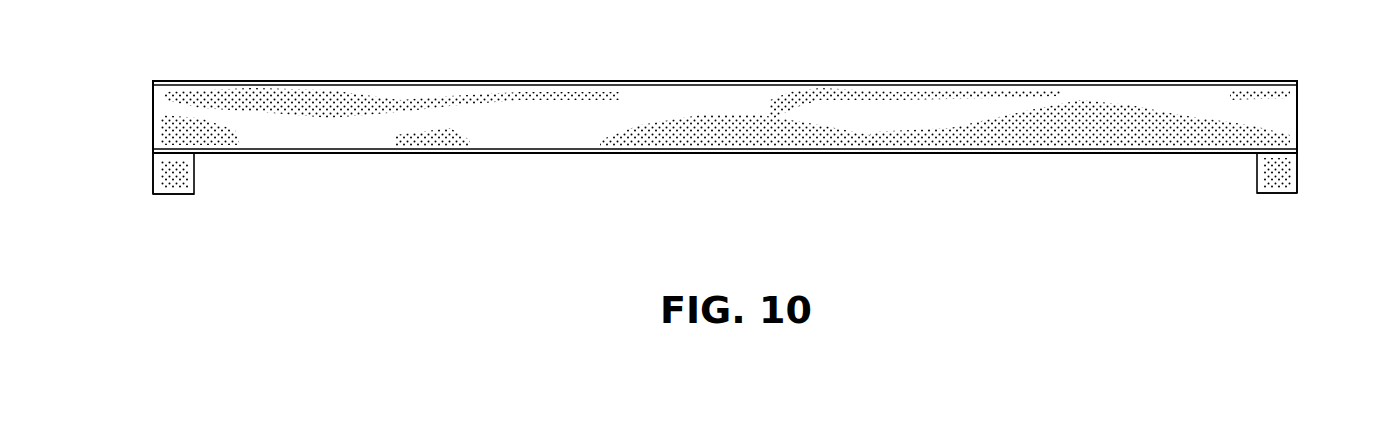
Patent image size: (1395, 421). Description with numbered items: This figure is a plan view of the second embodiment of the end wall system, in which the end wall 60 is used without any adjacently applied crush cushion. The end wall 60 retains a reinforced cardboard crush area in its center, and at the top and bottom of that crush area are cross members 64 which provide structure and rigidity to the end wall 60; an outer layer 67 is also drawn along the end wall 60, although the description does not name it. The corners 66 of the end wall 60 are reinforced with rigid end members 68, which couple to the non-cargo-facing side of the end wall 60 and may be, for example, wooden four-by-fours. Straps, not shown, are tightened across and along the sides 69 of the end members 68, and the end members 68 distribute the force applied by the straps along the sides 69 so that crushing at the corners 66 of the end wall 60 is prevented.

The end wall 60 is at (722, 152).
The cross member 64 is at (534, 133).
The corner 66 is at (153, 142).
The outer skin layer 67 is at (153, 100).
The rigid end member 68 is at (188, 172).
The side 69 is at (153, 178).